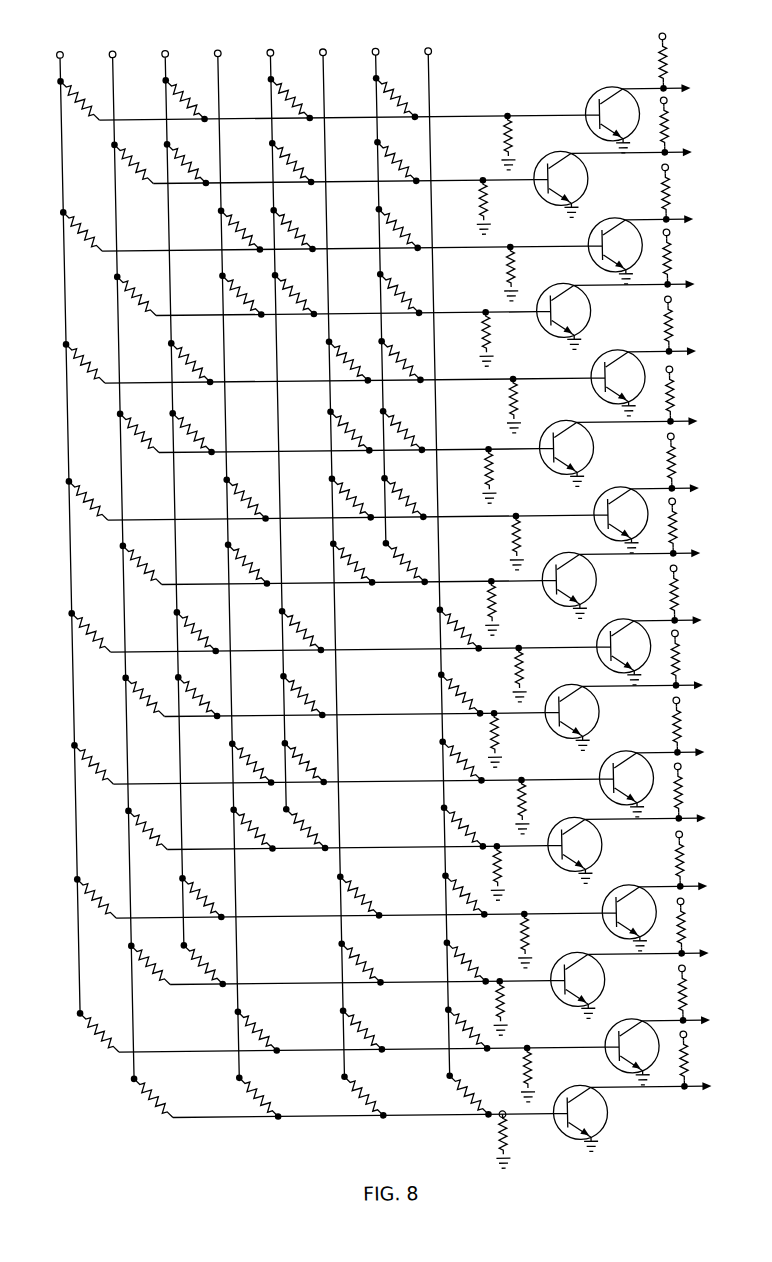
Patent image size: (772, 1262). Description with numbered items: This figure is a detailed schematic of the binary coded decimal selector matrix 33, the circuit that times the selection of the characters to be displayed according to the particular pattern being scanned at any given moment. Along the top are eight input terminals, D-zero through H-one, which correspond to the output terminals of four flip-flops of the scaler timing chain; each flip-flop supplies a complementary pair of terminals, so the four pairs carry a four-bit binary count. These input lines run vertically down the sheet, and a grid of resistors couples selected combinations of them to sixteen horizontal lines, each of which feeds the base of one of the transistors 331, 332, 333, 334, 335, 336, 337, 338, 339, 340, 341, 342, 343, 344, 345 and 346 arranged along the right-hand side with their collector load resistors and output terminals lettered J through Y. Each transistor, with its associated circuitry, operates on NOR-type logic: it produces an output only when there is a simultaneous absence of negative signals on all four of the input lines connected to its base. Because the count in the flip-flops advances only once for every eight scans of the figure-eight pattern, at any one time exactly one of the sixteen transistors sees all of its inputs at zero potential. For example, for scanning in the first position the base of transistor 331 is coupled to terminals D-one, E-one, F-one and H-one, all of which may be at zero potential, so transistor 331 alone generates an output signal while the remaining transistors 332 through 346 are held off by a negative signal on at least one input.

The binary coded decimal selector matrix 33 is at (420, 1164).
The transistor 331 is at (588, 104).
The transistor 332 is at (539, 163).
The transistor 333 is at (606, 224).
The transistor 334 is at (539, 295).
The transistor 335 is at (606, 356).
The transistor 336 is at (539, 432).
The transistor 337 is at (606, 493).
The transistor 338 is at (539, 564).
The transistor 339 is at (606, 625).
The transistor 340 is at (539, 696).
The transistor 341 is at (606, 757).
The transistor 342 is at (539, 829).
The transistor 343 is at (606, 891).
The transistor 344 is at (539, 964).
The transistor 345 is at (606, 1025).
The transistor 346 is at (539, 1097).